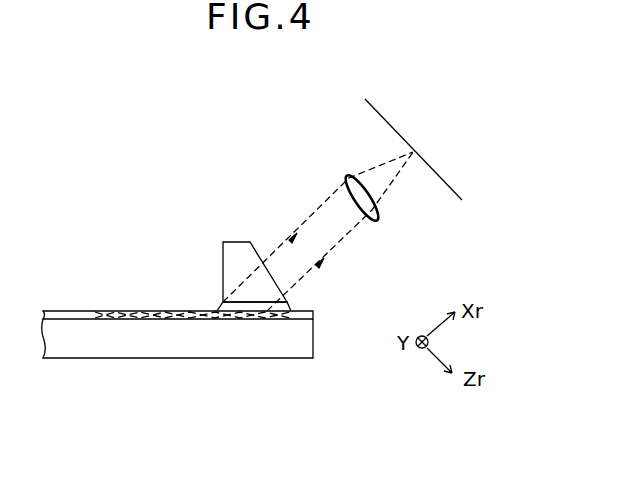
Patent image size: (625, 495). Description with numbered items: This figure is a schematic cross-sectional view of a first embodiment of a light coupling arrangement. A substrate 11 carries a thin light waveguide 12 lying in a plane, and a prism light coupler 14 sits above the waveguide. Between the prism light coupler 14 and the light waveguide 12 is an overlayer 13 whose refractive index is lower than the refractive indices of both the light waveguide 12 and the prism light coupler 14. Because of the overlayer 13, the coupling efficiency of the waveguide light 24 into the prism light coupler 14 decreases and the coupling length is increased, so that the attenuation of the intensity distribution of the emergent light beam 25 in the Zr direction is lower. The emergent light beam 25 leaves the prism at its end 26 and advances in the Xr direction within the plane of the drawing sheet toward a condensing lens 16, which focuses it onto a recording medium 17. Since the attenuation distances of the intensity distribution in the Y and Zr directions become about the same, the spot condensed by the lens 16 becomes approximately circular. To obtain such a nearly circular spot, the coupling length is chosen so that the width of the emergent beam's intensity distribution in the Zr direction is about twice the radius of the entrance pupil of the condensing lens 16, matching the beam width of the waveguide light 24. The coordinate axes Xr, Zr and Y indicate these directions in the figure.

The substrate 11 is at (314, 345).
The light waveguide 12 is at (314, 314).
The overlayer 13 is at (292, 306).
The prism light coupler 14 is at (290, 297).
The condensing lens 16 is at (376, 218).
The recording medium 17 is at (462, 202).
The waveguide light 24 is at (120, 310).
The emergent light beam 25 is at (303, 218).
The end of prism 26 is at (217, 306).